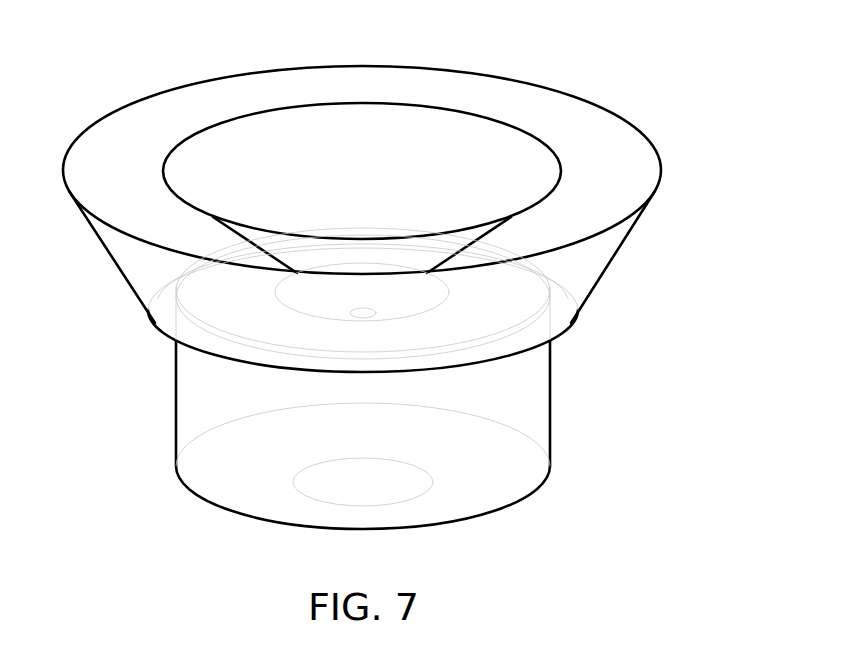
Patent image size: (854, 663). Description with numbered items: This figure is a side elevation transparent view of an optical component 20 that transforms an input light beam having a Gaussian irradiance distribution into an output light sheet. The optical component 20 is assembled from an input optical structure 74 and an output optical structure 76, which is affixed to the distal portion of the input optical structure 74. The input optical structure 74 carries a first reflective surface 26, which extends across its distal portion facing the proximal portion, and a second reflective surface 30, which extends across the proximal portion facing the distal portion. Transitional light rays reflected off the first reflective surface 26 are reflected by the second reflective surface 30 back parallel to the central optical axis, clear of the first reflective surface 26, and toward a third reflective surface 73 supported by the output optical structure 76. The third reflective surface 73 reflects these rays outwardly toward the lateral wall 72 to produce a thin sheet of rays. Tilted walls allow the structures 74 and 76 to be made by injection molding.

The optical component 20 is at (390, 273).
The first reflective surface 26 is at (303, 313).
The second reflective surface 30 is at (518, 478).
The lateral wall 72 is at (617, 253).
The third reflective surface 73 is at (213, 218).
The input optical structure 74 is at (551, 393).
The output optical structure 76 is at (661, 169).